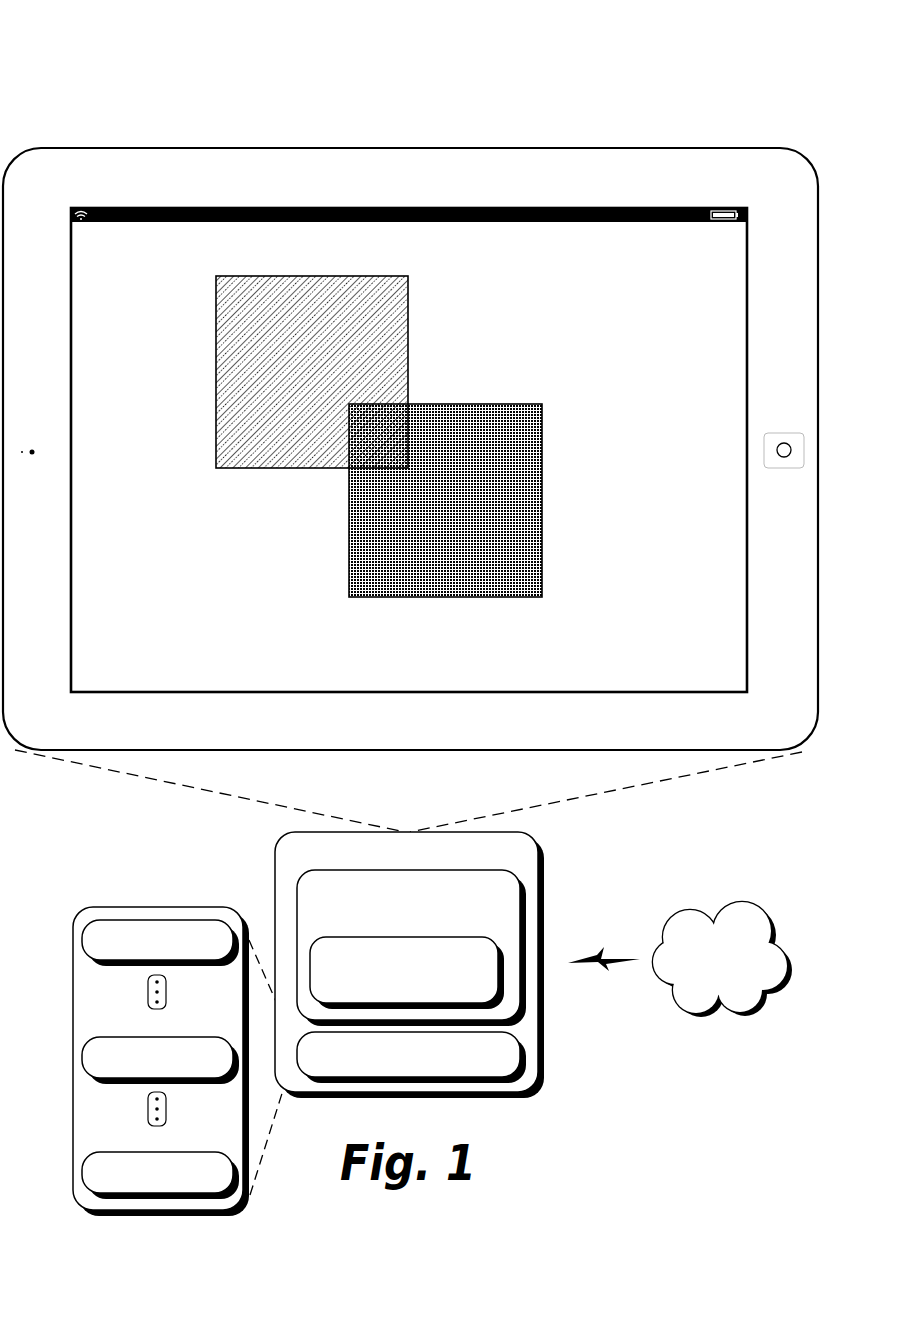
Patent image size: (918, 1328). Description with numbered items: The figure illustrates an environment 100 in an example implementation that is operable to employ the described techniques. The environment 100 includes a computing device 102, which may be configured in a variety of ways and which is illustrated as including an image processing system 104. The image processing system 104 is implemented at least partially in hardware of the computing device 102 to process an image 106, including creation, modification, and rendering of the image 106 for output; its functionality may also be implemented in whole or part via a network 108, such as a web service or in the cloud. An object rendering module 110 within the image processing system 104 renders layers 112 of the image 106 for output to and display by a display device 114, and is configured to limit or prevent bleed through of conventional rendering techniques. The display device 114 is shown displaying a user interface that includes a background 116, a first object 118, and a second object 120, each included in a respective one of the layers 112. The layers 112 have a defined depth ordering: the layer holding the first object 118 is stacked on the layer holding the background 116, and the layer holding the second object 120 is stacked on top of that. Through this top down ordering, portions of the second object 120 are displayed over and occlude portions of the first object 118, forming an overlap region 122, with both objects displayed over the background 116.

The environment 100 is at (146, 83).
The computing device 102 is at (515, 861).
The image processing system 104 is at (462, 927).
The image 106 is at (458, 1062).
The network 108 is at (703, 981).
The object rendering module 110 is at (459, 992).
The layers 112 is at (217, 951).
The display device 114 is at (652, 222).
The background 116 is at (520, 245).
The first object 118 is at (216, 368).
The second object 120 is at (505, 404).
The overlap region 122 is at (362, 468).